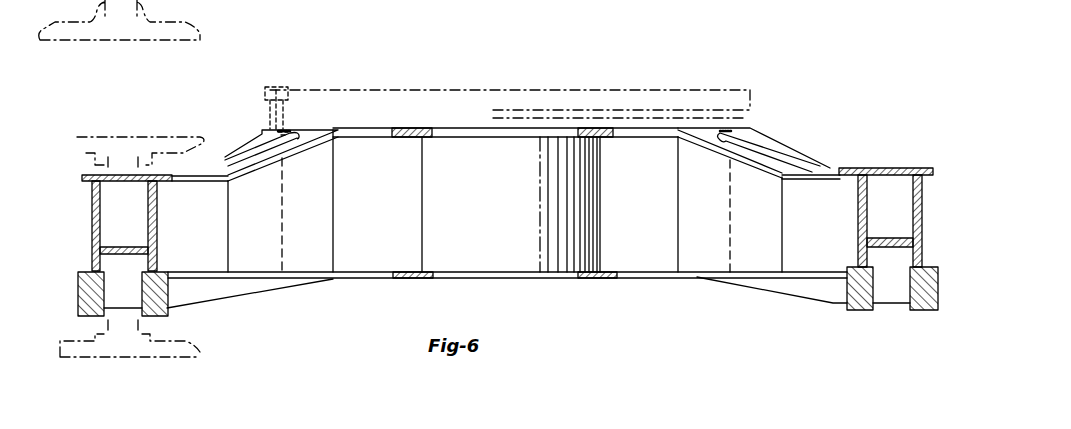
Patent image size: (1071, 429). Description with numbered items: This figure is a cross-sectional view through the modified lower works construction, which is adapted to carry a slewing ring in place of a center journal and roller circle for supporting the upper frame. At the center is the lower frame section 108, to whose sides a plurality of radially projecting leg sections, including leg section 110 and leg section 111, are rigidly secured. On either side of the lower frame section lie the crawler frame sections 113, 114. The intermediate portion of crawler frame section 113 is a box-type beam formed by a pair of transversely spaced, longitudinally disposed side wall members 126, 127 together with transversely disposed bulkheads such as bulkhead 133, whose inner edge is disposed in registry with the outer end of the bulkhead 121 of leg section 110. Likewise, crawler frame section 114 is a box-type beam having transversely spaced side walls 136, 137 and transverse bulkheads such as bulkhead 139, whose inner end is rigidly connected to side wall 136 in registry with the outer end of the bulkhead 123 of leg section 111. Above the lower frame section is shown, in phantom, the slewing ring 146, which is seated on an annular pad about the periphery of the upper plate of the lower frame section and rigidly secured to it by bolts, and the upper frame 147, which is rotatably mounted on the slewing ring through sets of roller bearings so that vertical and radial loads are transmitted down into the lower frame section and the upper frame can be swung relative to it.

The lower frame section 108 is at (390, 281).
The leg section 110 is at (248, 282).
The leg section 111 is at (800, 278).
The crawler frame section 113 is at (88, 218).
The crawler frame section 114 is at (922, 220).
The bulkhead 121 is at (207, 215).
The bulkhead 123 is at (823, 193).
The side wall member 126 is at (92, 195).
The side wall member 127 is at (159, 206).
The bulkhead 133 is at (133, 232).
The side wall 136 is at (858, 218).
The side wall 137 is at (922, 190).
The bulkhead 139 is at (902, 182).
The slewing ring 146 is at (262, 98).
The upper frame 147 is at (475, 77).